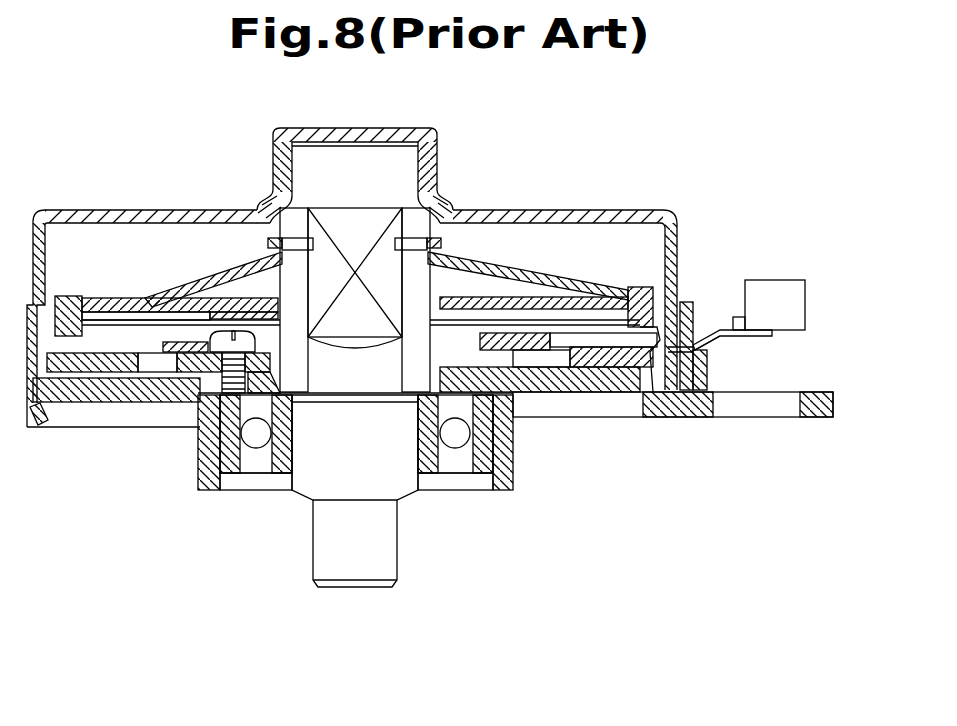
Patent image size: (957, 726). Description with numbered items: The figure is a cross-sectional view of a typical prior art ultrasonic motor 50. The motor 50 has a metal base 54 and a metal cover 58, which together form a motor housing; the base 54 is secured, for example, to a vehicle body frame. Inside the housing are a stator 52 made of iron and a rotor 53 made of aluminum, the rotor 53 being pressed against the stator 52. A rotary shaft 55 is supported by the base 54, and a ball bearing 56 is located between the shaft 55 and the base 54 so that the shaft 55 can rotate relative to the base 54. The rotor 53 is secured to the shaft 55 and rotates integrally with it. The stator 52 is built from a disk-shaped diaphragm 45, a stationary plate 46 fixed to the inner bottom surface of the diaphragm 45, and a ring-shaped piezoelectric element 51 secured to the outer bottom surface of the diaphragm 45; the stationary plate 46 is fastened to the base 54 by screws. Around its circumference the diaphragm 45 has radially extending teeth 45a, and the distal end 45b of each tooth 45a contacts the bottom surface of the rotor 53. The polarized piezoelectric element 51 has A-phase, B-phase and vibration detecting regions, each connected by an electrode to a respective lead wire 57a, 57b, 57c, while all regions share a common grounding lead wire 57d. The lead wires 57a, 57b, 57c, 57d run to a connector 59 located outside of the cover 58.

The ultrasonic motor 50 is at (170, 210).
The metal cover 58 is at (623, 208).
The rotor 53 is at (647, 282).
The lead wire 57a is at (754, 255).
The lead wire 57b is at (754, 255).
The lead wire 57c is at (754, 255).
The common grounding lead wire 57d is at (707, 345).
The connector 59 is at (773, 280).
The tooth 45a is at (118, 350).
The distal end 45b is at (70, 336).
The stator 52 is at (120, 373).
The stationary plate 46 is at (262, 360).
The diaphragm 45 is at (177, 373).
The piezoelectric element 51 is at (603, 367).
The metal base 54 is at (700, 415).
The ball bearing 56 is at (475, 463).
The rotary shaft 55 is at (383, 567).